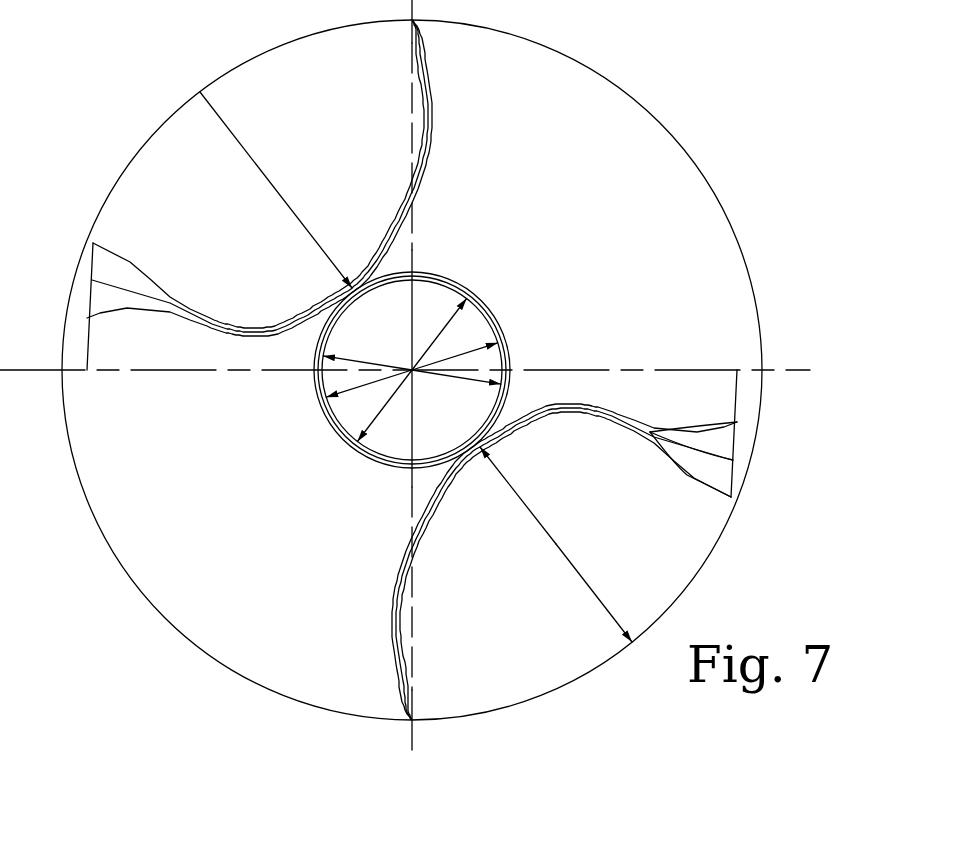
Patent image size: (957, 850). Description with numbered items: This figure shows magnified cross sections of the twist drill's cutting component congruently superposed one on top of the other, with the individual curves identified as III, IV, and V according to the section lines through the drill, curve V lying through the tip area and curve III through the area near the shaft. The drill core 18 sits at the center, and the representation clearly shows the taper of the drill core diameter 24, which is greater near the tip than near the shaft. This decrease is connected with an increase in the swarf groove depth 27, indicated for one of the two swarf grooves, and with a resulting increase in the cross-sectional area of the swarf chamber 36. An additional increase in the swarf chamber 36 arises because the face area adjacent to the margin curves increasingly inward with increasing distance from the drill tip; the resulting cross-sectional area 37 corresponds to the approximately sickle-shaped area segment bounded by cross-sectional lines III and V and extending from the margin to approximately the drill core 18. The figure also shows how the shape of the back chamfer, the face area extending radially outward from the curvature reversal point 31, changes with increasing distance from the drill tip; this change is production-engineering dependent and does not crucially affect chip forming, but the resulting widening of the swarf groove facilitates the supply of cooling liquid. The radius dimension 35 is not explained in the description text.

The drill core 18 is at (403, 440).
The drill core diameter 24 is at (472, 356).
The swarf groove depth 27 is at (553, 548).
The curvature reversal point 31 is at (662, 442).
The blade radius 35 is at (238, 141).
The swarf chamber 36 is at (163, 162).
The cross-sectional area 37 is at (427, 174).
The cross-sectional line III is at (720, 432).
The cross-sectional line IV is at (711, 460).
The cross-sectional line V is at (706, 489).